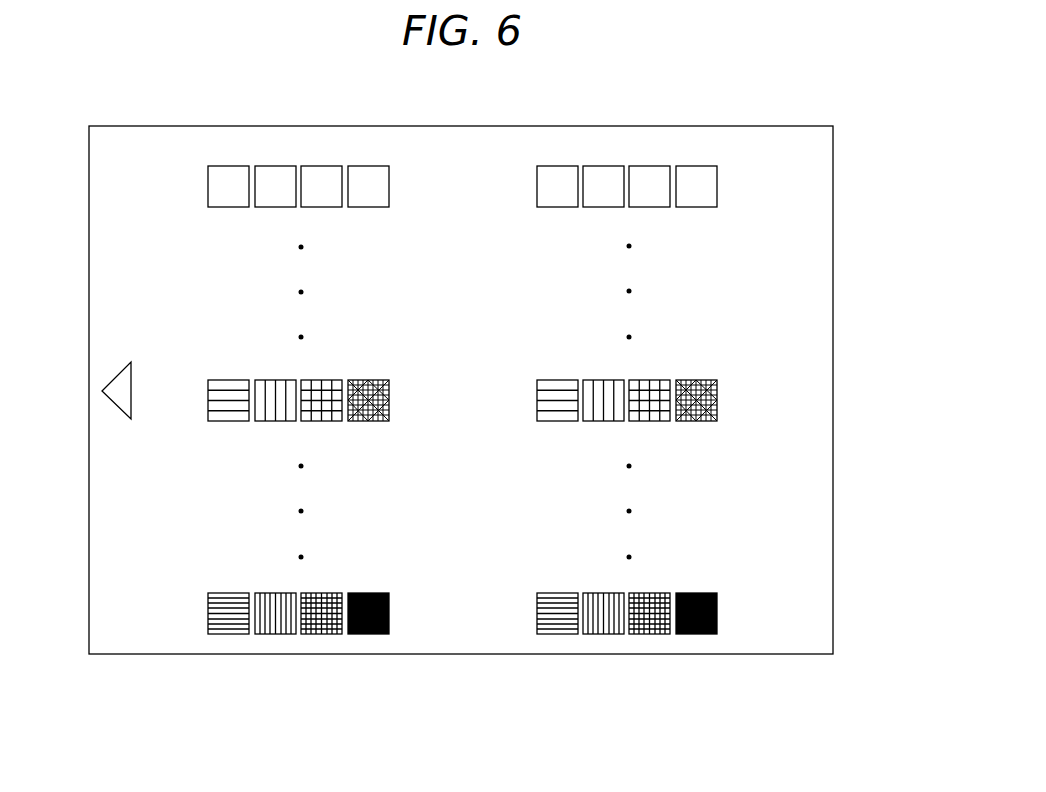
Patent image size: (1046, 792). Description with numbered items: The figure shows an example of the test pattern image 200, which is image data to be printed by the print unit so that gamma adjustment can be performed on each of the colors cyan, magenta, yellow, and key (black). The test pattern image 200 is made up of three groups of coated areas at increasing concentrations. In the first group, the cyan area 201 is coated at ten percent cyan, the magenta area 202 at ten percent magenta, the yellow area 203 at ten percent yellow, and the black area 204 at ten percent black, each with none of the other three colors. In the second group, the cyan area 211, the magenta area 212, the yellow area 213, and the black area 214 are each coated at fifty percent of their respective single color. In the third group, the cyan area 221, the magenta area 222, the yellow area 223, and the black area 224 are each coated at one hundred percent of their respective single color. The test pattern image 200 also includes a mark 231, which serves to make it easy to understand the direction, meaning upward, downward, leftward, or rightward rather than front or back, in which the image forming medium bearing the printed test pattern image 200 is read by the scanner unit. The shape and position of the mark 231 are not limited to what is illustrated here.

The test pattern image 200 is at (81, 118).
The cyan area 201 is at (208, 202).
The magenta area 202 is at (263, 207).
The yellow area 203 is at (310, 207).
The black area 204 is at (350, 207).
The cyan area 211 is at (209, 412).
The magenta area 212 is at (265, 421).
The yellow area 213 is at (310, 421).
The black area 214 is at (353, 421).
The cyan area 221 is at (209, 627).
The magenta area 222 is at (268, 634).
The yellow area 223 is at (313, 634).
The black area 224 is at (353, 634).
The mark 231 is at (108, 378).